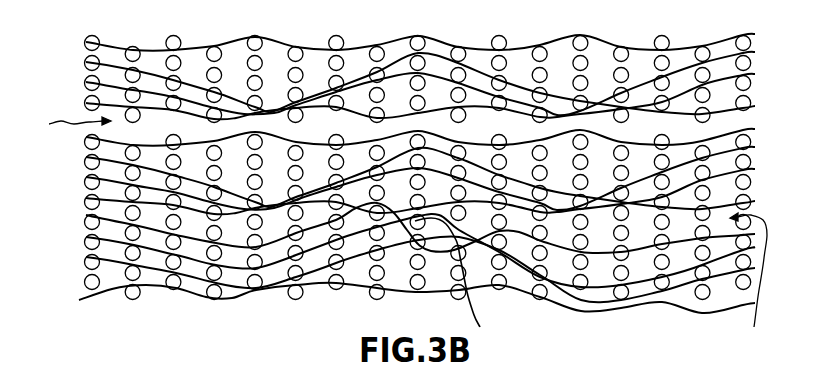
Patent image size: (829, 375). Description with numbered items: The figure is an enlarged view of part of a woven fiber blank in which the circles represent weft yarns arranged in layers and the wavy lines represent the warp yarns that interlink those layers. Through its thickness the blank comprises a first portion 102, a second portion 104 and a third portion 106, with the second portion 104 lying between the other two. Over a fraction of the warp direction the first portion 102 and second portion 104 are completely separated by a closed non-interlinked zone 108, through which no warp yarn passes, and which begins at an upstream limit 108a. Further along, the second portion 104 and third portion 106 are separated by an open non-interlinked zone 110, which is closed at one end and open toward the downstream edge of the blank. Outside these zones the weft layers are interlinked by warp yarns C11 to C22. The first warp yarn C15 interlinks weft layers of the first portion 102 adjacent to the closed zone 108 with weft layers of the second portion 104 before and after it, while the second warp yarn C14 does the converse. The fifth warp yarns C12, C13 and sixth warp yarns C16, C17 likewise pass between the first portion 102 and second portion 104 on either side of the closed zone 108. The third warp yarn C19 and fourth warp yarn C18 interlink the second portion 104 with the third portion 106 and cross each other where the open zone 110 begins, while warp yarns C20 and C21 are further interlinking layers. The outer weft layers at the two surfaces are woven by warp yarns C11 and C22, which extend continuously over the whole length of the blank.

The first portion 102 is at (81, 38).
The second portion 104 is at (81, 135).
The third portion 106 is at (81, 217).
The closed non-interlinked zone 108 is at (61, 124).
The upstream limit 108a is at (467, 281).
The open non-interlinked zone 110 is at (750, 281).
The warp yarn C11 is at (97, 38).
The fifth warp yarn C12 is at (150, 47).
The fifth warp yarn C13 is at (192, 113).
The second warp yarn C14 is at (270, 132).
The first warp yarn C15 is at (235, 127).
The sixth warp yarn C16 is at (310, 152).
The sixth warp yarn C17 is at (354, 187).
The fourth warp yarn C18 is at (157, 205).
The third warp yarn C19 is at (194, 238).
The warp yarn layer C20 is at (233, 270).
The warp yarn layer C21 is at (316, 282).
The warp yarn C22 is at (110, 288).